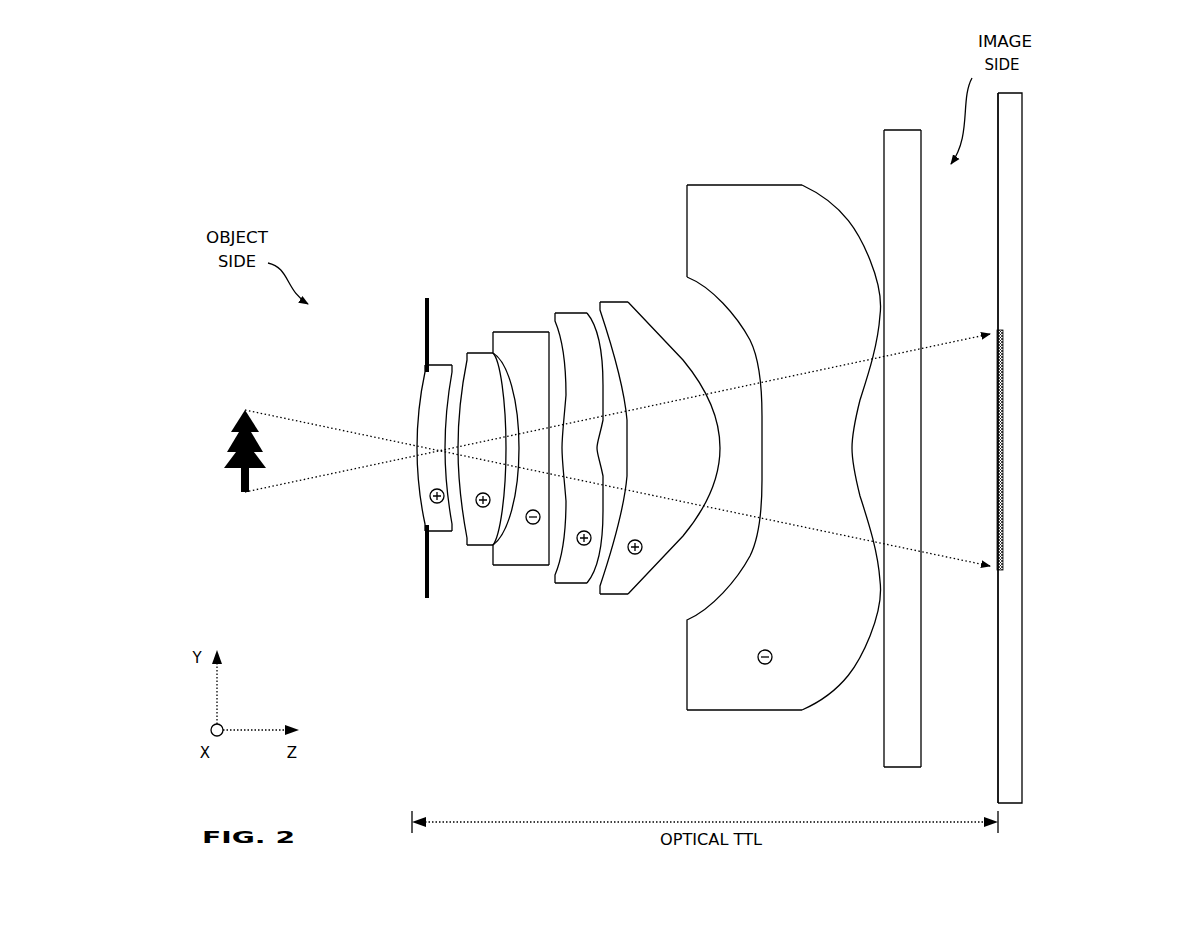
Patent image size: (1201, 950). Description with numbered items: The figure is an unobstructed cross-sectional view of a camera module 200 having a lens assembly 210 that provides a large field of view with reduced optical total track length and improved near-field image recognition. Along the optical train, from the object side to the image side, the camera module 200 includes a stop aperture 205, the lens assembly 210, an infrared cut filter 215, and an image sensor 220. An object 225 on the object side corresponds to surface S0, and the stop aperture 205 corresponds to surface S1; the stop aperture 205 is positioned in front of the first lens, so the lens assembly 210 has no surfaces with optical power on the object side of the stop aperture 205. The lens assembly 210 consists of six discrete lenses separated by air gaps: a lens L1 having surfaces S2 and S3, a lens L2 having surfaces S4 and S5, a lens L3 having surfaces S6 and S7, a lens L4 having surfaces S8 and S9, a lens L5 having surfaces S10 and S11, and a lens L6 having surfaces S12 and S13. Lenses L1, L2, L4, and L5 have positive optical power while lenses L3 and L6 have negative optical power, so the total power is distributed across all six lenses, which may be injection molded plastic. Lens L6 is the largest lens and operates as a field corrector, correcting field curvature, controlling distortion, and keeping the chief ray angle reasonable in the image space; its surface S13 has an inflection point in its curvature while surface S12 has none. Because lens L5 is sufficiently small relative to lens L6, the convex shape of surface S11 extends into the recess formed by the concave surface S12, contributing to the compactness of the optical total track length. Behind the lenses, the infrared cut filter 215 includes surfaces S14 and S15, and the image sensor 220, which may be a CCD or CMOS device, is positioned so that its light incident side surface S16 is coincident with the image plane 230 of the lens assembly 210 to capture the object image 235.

The camera module 200 is at (300, 106).
The stop aperture 205 is at (425, 308).
The lens assembly 210 is at (423, 158).
The infrared cut filter 215 is at (895, 416).
The image sensor 220 is at (980, 450).
The object 225 is at (218, 418).
The image plane 230 is at (998, 802).
The object image 235 is at (1003, 452).
The lens L1 is at (414, 493).
The lens L2 is at (474, 453).
The lens L3 is at (511, 448).
The lens L4 is at (559, 447).
The lens L5 is at (632, 451).
The lens L6 is at (765, 447).
The object surface S0 is at (218, 445).
The stop aperture surface S1 is at (423, 573).
The surface S2 of lens L1 S2 is at (418, 493).
The surface S3 of lens L1 S3 is at (458, 385).
The surface S4 of lens L2 S4 is at (468, 530).
The surface S5 of lens L2 S5 is at (505, 396).
The surface S6 of lens L3 S6 is at (512, 527).
The surface S7 of lens L3 S7 is at (553, 338).
The surface S8 of lens L4 S8 is at (562, 540).
The surface S9 of lens L4 S9 is at (593, 313).
The surface S10 of lens L5 S10 is at (601, 575).
The surface S11 of lens L5 S11 is at (656, 328).
The surface S12 of lens L6 S12 is at (739, 320).
The surface S13 of lens L6 S13 is at (874, 549).
The surface S14 of IRCF S14 is at (884, 205).
The surface S15 of IRCF S15 is at (921, 743).
The light incident side surface of image sensor S16 is at (998, 683).